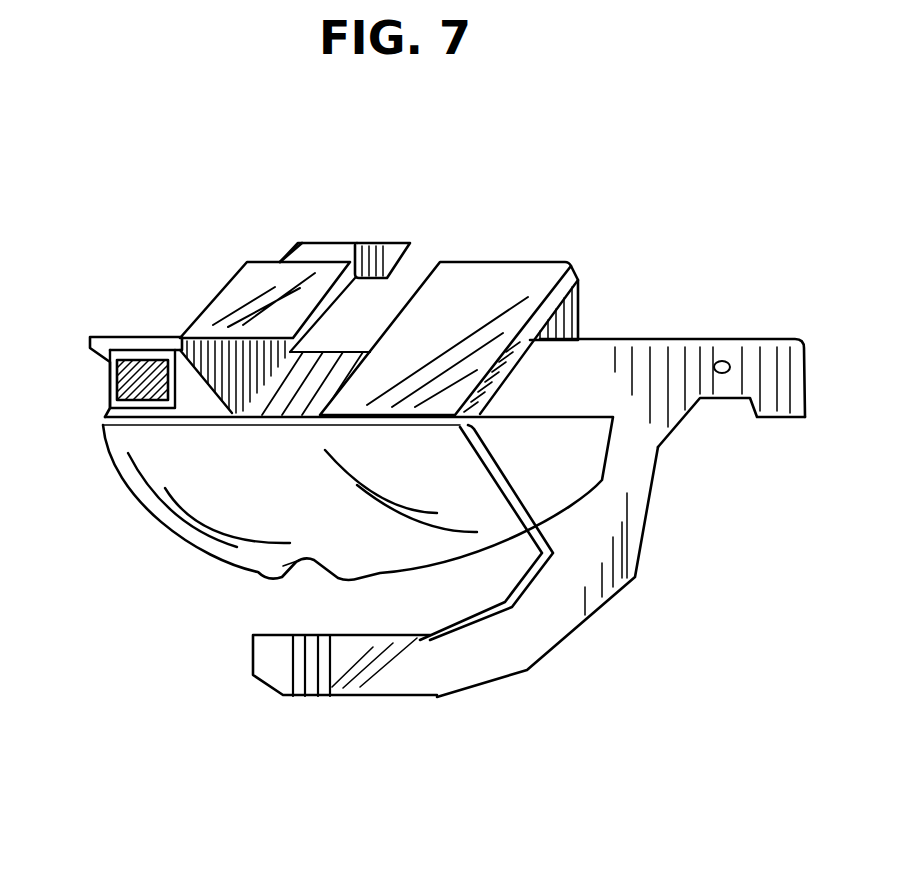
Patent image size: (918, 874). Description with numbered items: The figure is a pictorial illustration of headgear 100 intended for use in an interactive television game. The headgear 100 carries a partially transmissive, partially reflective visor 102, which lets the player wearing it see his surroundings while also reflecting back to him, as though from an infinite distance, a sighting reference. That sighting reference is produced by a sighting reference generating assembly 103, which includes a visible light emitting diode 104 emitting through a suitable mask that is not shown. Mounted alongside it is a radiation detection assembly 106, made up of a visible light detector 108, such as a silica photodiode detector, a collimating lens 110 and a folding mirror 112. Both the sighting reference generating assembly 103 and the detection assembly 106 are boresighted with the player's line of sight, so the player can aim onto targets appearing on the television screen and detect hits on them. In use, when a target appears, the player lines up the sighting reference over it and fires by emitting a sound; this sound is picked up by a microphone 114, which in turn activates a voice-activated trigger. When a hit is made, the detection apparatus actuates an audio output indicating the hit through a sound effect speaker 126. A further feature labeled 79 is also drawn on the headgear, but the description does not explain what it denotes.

The headgear 100 is at (150, 180).
The partially transmissive partially reflective visor 102 is at (173, 523).
The sighting reference generating assembly 103 is at (439, 396).
The visible light emitting diode 104 is at (507, 380).
The radiation detection assembly 106 is at (233, 290).
The visible light detector 108 is at (352, 241).
The collimating lens 110 is at (112, 394).
The folding mirror 112 is at (233, 413).
The microphone 114 is at (300, 697).
The sound effect speaker 126 is at (723, 360).
The notch 79 is at (722, 400).